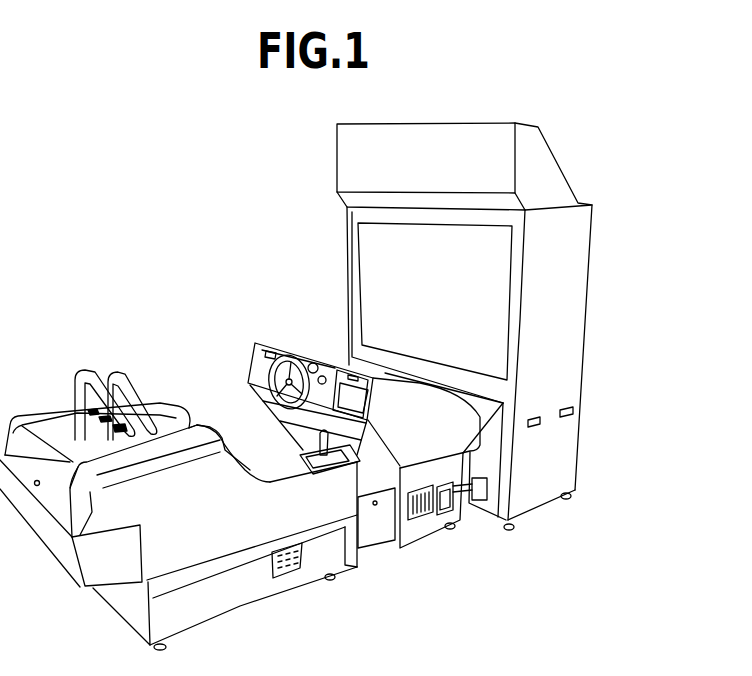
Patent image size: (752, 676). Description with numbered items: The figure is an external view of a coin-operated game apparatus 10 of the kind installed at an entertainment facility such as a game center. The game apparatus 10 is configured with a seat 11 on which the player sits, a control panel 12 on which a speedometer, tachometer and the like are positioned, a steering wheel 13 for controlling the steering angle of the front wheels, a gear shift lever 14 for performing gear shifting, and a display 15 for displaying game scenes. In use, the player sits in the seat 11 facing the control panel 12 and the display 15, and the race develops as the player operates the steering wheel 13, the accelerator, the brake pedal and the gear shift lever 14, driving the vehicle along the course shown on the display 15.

The game apparatus 10 is at (161, 254).
The seat 11 is at (158, 396).
The control panel 12 is at (358, 405).
The steering wheel 13 is at (298, 357).
The gear shift lever 14 is at (313, 440).
The display 15 is at (490, 267).